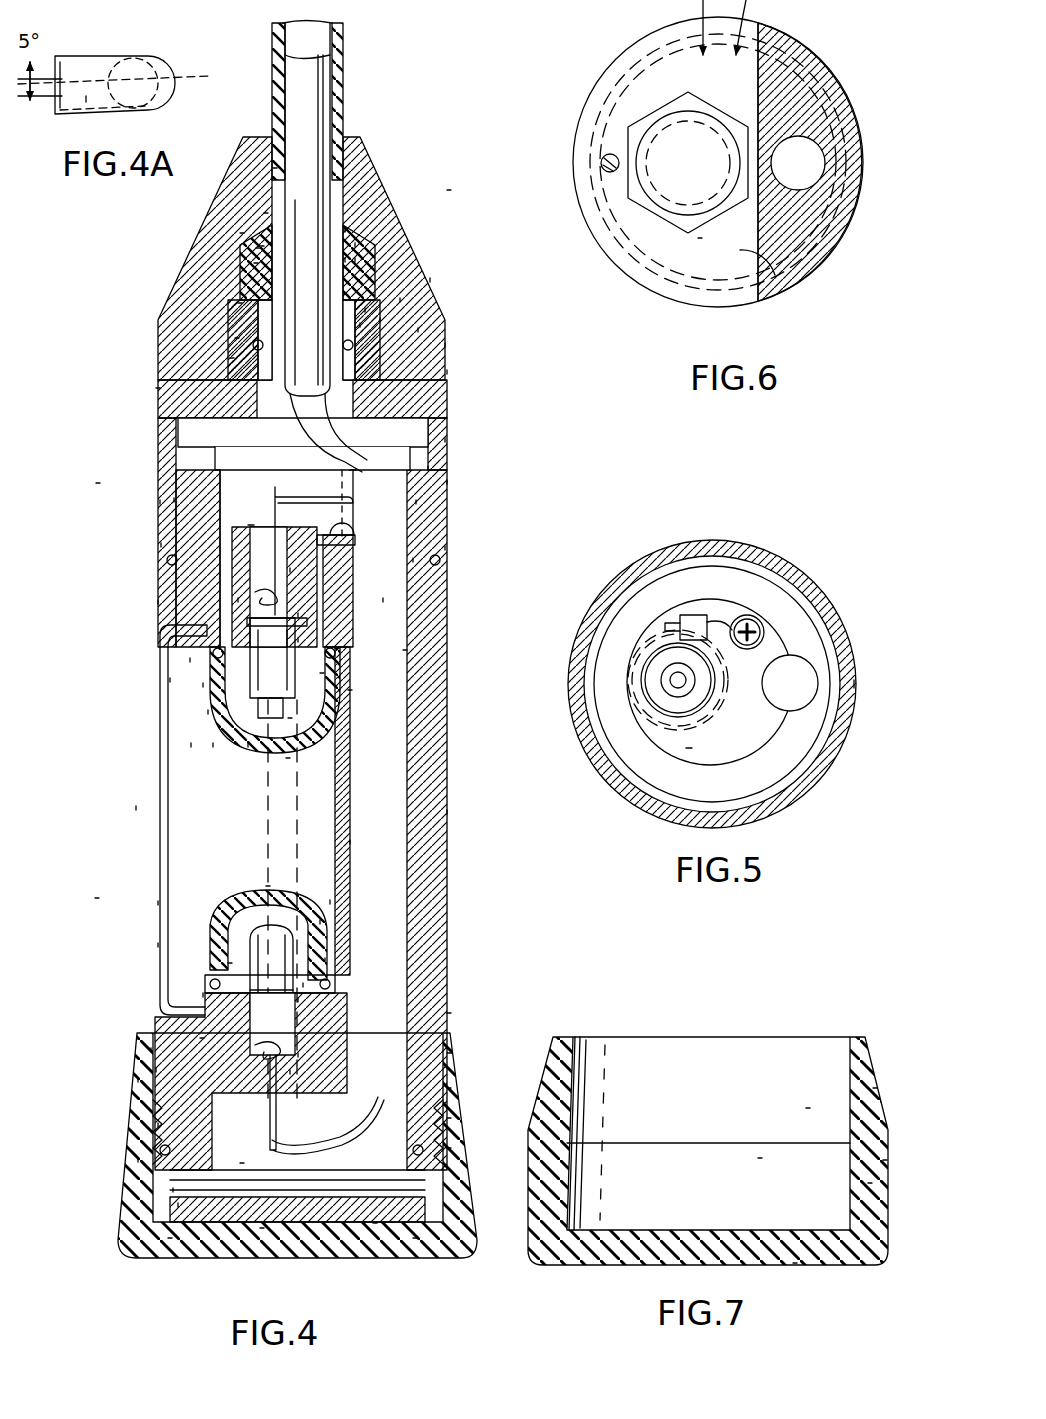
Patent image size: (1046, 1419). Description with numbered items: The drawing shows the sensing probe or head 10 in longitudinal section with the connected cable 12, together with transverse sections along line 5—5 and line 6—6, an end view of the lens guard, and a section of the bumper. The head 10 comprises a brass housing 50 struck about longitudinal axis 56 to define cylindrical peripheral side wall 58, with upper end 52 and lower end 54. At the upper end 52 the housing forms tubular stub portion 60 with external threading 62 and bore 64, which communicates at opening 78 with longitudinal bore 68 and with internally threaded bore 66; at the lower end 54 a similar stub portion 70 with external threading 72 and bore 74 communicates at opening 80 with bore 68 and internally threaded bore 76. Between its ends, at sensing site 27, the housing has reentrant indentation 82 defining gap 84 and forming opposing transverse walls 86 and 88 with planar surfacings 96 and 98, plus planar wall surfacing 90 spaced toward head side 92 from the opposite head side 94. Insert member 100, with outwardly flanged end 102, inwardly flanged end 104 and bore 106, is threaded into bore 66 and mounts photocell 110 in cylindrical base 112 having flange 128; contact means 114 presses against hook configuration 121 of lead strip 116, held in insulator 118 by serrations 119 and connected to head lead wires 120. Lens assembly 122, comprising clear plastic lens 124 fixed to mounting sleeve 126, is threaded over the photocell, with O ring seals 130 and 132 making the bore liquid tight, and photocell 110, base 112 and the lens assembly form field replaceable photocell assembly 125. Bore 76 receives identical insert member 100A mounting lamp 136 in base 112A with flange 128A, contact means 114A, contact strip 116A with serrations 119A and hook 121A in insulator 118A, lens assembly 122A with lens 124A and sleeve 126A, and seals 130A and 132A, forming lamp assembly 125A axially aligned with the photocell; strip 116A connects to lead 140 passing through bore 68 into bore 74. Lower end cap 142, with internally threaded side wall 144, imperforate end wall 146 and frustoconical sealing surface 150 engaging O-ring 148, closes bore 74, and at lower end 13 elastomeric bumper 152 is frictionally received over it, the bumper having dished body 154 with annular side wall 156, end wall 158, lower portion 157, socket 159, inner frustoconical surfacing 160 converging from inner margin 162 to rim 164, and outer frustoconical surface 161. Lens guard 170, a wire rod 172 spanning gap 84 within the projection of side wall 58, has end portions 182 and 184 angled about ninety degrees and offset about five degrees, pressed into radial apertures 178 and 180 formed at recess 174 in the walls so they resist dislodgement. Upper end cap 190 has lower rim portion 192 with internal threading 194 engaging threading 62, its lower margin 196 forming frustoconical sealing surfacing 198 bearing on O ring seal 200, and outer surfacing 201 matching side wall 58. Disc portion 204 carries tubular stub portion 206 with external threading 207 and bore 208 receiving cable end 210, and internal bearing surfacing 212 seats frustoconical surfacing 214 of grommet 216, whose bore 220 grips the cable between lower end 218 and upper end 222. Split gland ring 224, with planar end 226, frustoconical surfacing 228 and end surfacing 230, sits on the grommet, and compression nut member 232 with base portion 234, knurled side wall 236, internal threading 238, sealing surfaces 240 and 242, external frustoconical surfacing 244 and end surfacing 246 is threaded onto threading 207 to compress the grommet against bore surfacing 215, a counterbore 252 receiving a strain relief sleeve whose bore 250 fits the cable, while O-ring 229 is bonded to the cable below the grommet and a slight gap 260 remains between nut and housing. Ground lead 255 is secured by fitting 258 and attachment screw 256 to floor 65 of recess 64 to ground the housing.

In FIG. 4, the section line 5— 5 is at (98, 485).
In FIG. 4, the section line 6— 6 is at (97, 900).
In FIG. 4, the sensing probe or head 10 is at (548, 405).
In FIG. 4, the cable 12 is at (330, 38).
In FIG. 4, the lower end 13 is at (180, 1205).
In FIG. 4, the sensing site 27 is at (138, 808).
In FIG. 6, the housing 50 is at (835, 245).
In FIG. 5, the housing 50 is at (805, 775).
In FIG. 4, the housing 50 is at (449, 740).
In FIG. 4, the upper end 52 is at (178, 582).
In FIG. 4, the lower end 54 is at (158, 1070).
In FIG. 4, the longitudinal axis 56 is at (295, 830).
In FIG. 6, the cylindrical peripheral side wall 58 is at (805, 55).
In FIG. 4, the cylindrical peripheral side wall 58 is at (449, 812).
In FIG. 5, the tubular stub portion 60 is at (640, 745).
In FIG. 4, the tubular stub portion 60 is at (176, 500).
In FIG. 4, the external threading 62 is at (162, 502).
In FIG. 5, the bore 64 is at (690, 750).
In FIG. 4, the bore 64 is at (418, 502).
In FIG. 5, the floor 65 is at (765, 725).
In FIG. 4, the internally threaded bore 66 is at (385, 600).
In FIG. 6, the longitudinal bore 68 is at (825, 160).
In FIG. 5, the longitudinal bore 68 is at (795, 670).
In FIG. 4, the longitudinal bore 68 is at (405, 652).
In FIG. 4, the tubular stub portion 70 is at (160, 1125).
In FIG. 4, the external threading 72 is at (175, 1190).
In FIG. 4, the bore 74 is at (170, 1240).
In FIG. 4, the internally threaded bore 76 is at (300, 1055).
In FIG. 4, the opening 78 is at (392, 537).
In FIG. 4, the opening 80 is at (449, 1055).
In FIG. 4, the reentrant indentation 82 is at (215, 745).
In FIG. 4, the gap 84 is at (178, 838).
In FIG. 4, the housing wall 86 is at (205, 685).
In FIG. 6, the housing wall 88 is at (765, 230).
In FIG. 4, the housing wall 88 is at (348, 825).
In FIG. 6, the planar wall surfacing 90 is at (755, 262).
In FIG. 4, the planar wall surfacing 90 is at (352, 842).
In FIG. 4, the head side 92 is at (449, 1015).
In FIG. 4, the head side 94 is at (160, 602).
In FIG. 4, the planar surfacing 96 is at (210, 712).
In FIG. 4, the planar surfacing 98 is at (205, 995).
In FIG. 4, the insert member 100 is at (330, 590).
In FIG. 4, the insert member 100A is at (300, 1040).
In FIG. 4, the outwardly flanged end 102 is at (350, 692).
In FIG. 4, the inwardly flanged end 104 is at (250, 527).
In FIG. 4, the bore 106 is at (240, 600).
In FIG. 4, the photocell 110 is at (290, 720).
In FIG. 4, the cylindrical base 112 is at (282, 643).
In FIG. 4, the cylindrical base 112A is at (300, 965).
In FIG. 4, the electrical contact means 114 is at (300, 615).
In FIG. 4, the electrical contact means 114A is at (300, 1000).
In FIG. 4, the lead strip 116 is at (292, 570).
In FIG. 4, the contact strip 116A is at (262, 1230).
In FIG. 4, the insulator 118 is at (168, 562).
In FIG. 4, the insulator 118A is at (290, 1092).
In FIG. 4, the serrations 119 is at (272, 480).
In FIG. 4, the serrations 119A is at (242, 1165).
In FIG. 4, the head lead wires 120 is at (350, 450).
In FIG. 4, the hook configuration 121 is at (292, 595).
In FIG. 4, the hook configuration 121A is at (292, 1072).
In FIG. 4, the lens assembly 122 is at (193, 745).
In FIG. 6, the lens assembly 122A is at (700, 240).
In FIG. 4, the lens assembly 122A is at (332, 902).
In FIG. 4, the clear plastic lens 124 is at (250, 745).
In FIG. 6, the lens 124A is at (672, 190).
In FIG. 4, the lens 124A is at (322, 922).
In FIG. 4, the photocell assembly 125 is at (288, 760).
In FIG. 4, the lamp assembly 125A is at (268, 888).
In FIG. 4, the mounting sleeve 126 is at (318, 660).
In FIG. 4, the mounting sleeve 126A is at (327, 960).
In FIG. 4, the flange 128 is at (300, 640).
In FIG. 4, the flange 128A is at (305, 985).
In FIG. 4, the O ring seal 130 is at (322, 675).
In FIG. 4, the O ring seal 130A is at (213, 977).
In FIG. 4, the O ring seal 132 is at (300, 700).
In FIG. 4, the O ring seal 132A is at (230, 965).
In FIG. 4, the electrical lamp 136 is at (250, 900).
In FIG. 4, the lead 140 is at (375, 1225).
In FIG. 4, the lower end cap 142 is at (449, 1150).
In FIG. 4, the internally threaded side wall portion 144 is at (455, 1180).
In FIG. 4, the imperforate end wall 146 is at (415, 1240).
In FIG. 4, the O-ring seal 148 is at (449, 1090).
In FIG. 4, the frustoconical sealing surface 150 is at (449, 1120).
In FIG. 7, the bumper or boot 152 is at (868, 1270).
In FIG. 4, the bumper or boot 152 is at (125, 1258).
In FIG. 7, the dished resilient flexible body 154 is at (885, 1162).
In FIG. 4, the dished resilient flexible body 154 is at (345, 1240).
In FIG. 7, the annular side wall 156 is at (870, 1185).
In FIG. 4, the annular side wall 156 is at (140, 1160).
In FIG. 7, the lower portion 157 is at (760, 1160).
In FIG. 7, the imperforate end wall 158 is at (800, 1053).
In FIG. 7, the bumper socket 159 is at (808, 1110).
In FIG. 7, the inner frusto-conical surfacing 160 is at (712, 1062).
In FIG. 7, the outer frusto-conical surface 161 is at (875, 1090).
In FIG. 4, the outer frusto-conical surface 161 is at (140, 1080).
In FIG. 7, the inner margin 162 is at (700, 1143).
In FIG. 7, the rim 164 is at (680, 1037).
In FIG. 4A, the lens guard 170 is at (150, 55).
In FIG. 6, the lens guard 170 is at (612, 155).
In FIG. 4, the lens guard 170 is at (160, 903).
In FIG. 6, the rod or bar 172 is at (650, 150).
In FIG. 4, the rod or bar 172 is at (160, 945).
In FIG. 4, the recess 174 is at (192, 660).
In FIG. 4, the aperture 178 is at (172, 640).
In FIG. 4, the aperture 180 is at (153, 1050).
In FIG. 4A, the end portion 182 is at (88, 100).
In FIG. 4, the end portion 182 is at (172, 680).
In FIG. 4A, the end portion 184 is at (72, 56).
In FIG. 4, the end portion 184 is at (202, 1040).
In FIG. 5, the upper end cap 190 is at (838, 618).
In FIG. 4, the upper end cap 190 is at (449, 400).
In FIG. 5, the lower rim portion 192 is at (852, 680).
In FIG. 4, the lower rim portion 192 is at (449, 482).
In FIG. 4, the internal threading 194 is at (430, 468).
In FIG. 4, the lower margin 196 is at (163, 545).
In FIG. 4, the frustoconical sealing surfacing 198 is at (447, 548).
In FIG. 4, the O ring seal 200 is at (415, 560).
In FIG. 4, the outer surfacing 201 is at (447, 440).
In FIG. 4, the disc portion 204 is at (195, 380).
In FIG. 4, the tubular stub portion 206 is at (367, 310).
In FIG. 4, the external threading 207 is at (362, 325).
In FIG. 4, the bore 208 is at (420, 330).
In FIG. 4, the cable end 210 is at (357, 260).
In FIG. 4, the frustoconical bearing surfacing 212 is at (240, 268).
In FIG. 4, the frustoconical surfacing 214 is at (240, 305).
In FIG. 4, the bore surfacing 215 is at (256, 265).
In FIG. 4, the grommet 216 is at (262, 248).
In FIG. 4, the lower end 218 is at (237, 340).
In FIG. 4, the bore 220 is at (357, 245).
In FIG. 4, the upper end 222 is at (398, 230).
In FIG. 4, the split gland ring 224 is at (258, 250).
In FIG. 4, the planar end 226 is at (347, 230).
In FIG. 4, the frustoconical bearing surfacing 228 is at (242, 235).
In FIG. 4, the O-ring 229 is at (232, 360).
In FIG. 4, the bearing surfacing 230 is at (322, 240).
In FIG. 4, the compression nut member 232 is at (402, 300).
In FIG. 4, the base portion 234 is at (447, 345).
In FIG. 4, the side wall 236 is at (449, 372).
In FIG. 4, the internal threading 238 is at (382, 320).
In FIG. 4, the frustoconical sealing surface 240 is at (347, 260).
In FIG. 4, the transverse annular sealing surface 242 is at (266, 215).
In FIG. 4, the external frustoconical surfacing 244 is at (432, 280).
In FIG. 4, the end surfacing 246 is at (345, 100).
In FIG. 4, the bore 250 is at (272, 130).
In FIG. 4, the counterbore 252 is at (275, 170).
In FIG. 5, the ground lead 255 is at (675, 610).
In FIG. 5, the attachment screw 256 is at (755, 615).
In FIG. 4, the attachment screw 256 is at (352, 472).
In FIG. 5, the fitting 258 is at (722, 620).
In FIG. 4, the fitting 258 is at (290, 445).
In FIG. 4, the gap 260 is at (158, 390).